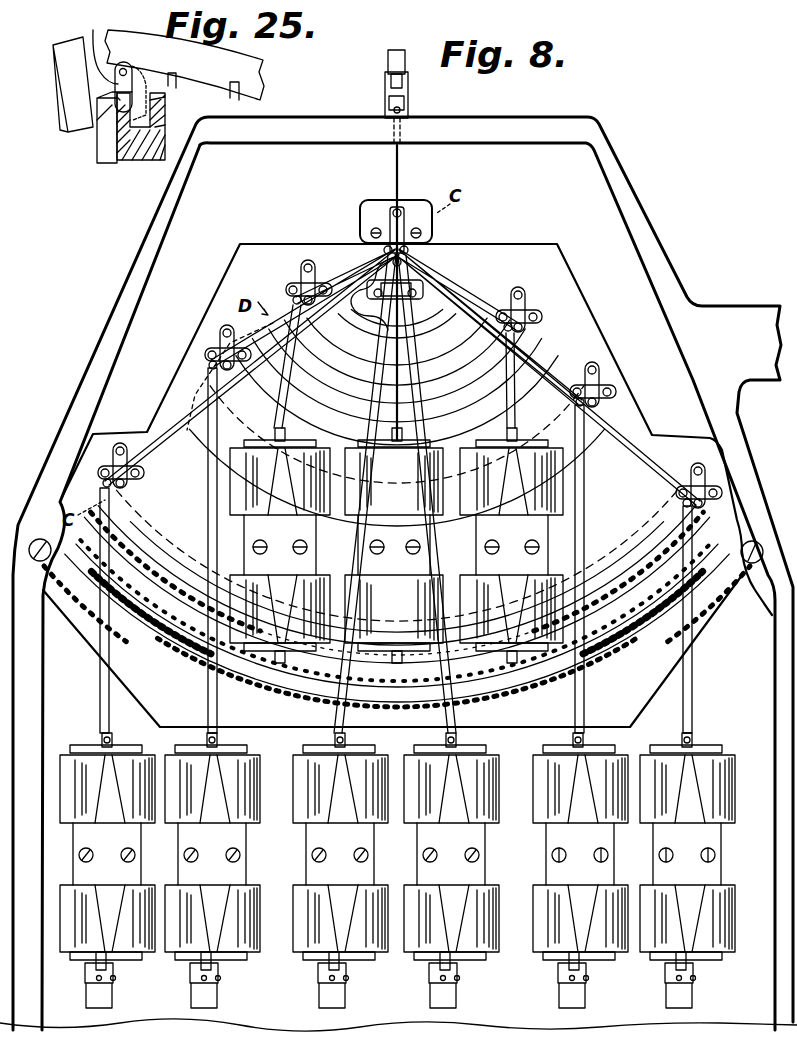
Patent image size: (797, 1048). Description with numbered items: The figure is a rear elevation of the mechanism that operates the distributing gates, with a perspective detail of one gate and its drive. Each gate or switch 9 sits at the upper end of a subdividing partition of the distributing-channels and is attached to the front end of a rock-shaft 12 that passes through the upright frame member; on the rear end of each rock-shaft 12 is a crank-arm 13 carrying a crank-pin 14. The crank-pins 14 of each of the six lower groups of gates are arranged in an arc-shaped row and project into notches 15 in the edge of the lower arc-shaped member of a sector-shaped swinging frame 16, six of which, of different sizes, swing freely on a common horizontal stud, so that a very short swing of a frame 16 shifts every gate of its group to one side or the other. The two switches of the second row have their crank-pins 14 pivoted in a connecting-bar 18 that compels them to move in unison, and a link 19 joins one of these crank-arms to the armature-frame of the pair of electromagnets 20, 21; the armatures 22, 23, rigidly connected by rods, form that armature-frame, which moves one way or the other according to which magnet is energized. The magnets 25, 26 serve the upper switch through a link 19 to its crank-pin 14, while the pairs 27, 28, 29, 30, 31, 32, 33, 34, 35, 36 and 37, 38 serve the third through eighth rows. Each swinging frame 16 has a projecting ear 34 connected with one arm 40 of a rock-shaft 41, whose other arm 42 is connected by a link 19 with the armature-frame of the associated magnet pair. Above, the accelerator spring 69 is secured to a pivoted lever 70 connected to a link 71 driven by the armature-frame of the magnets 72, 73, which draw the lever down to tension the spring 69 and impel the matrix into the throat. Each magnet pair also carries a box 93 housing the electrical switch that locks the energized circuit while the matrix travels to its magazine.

In FIG. 25, the switch 9 is at (73, 84).
In FIG. 25, the rock-shaft 12 is at (98, 122).
In FIG. 8, the rock-shaft 12 is at (415, 248).
In FIG. 25, the crank-arm 13 is at (99, 47).
In FIG. 8, the crank-arm 13 is at (392, 233).
In FIG. 25, the crank-pin 14 is at (125, 66).
In FIG. 8, the crank-pin 14 is at (370, 252).
In FIG. 25, the notch 15 is at (147, 66).
In FIG. 25, the swinging frame 16 is at (184, 65).
In FIG. 8, the swinging frame 16 is at (427, 336).
In FIG. 8, the connecting-bar 18 is at (420, 284).
In FIG. 8, the link 19 is at (209, 470).
In FIG. 8, the electromagnet 20 is at (467, 810).
In FIG. 8, the electromagnet 21 is at (467, 897).
In FIG. 8, the armature 22 is at (242, 752).
In FIG. 8, the armature 23 is at (242, 958).
In FIG. 8, the electromagnet 25 is at (357, 815).
In FIG. 8, the electromagnet 26 is at (358, 905).
In FIG. 8, the electromagnet 27 is at (297, 502).
In FIG. 8, the electromagnet 28 is at (297, 590).
In FIG. 8, the electromagnet 29 is at (511, 489).
In FIG. 8, the electromagnet 30 is at (535, 583).
In FIG. 8, the electromagnet 31 is at (229, 805).
In FIG. 8, the electromagnet 32 is at (232, 905).
In FIG. 8, the electromagnet 33 is at (597, 810).
In FIG. 8, the electromagnet 34 is at (596, 897).
In FIG. 8, the electromagnet 35 is at (122, 808).
In FIG. 8, the electromagnet 36 is at (124, 905).
In FIG. 8, the electromagnet 37 is at (707, 822).
In FIG. 8, the electromagnet 38 is at (707, 905).
In FIG. 8, the arm 40 is at (598, 392).
In FIG. 8, the rock-shaft 41 is at (601, 404).
In FIG. 8, the arm 42 is at (591, 410).
In FIG. 8, the spring 69 is at (390, 78).
In FIG. 8, the pivoted lever 70 is at (406, 88).
In FIG. 8, the link 71 is at (400, 176).
In FIG. 8, the electromagnet 72 is at (388, 494).
In FIG. 8, the electromagnet 73 is at (400, 494).
In FIG. 8, the box 93 is at (113, 993).